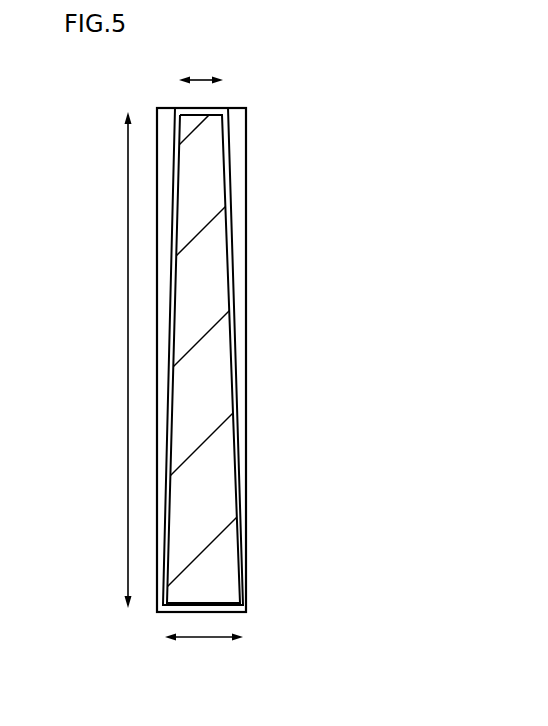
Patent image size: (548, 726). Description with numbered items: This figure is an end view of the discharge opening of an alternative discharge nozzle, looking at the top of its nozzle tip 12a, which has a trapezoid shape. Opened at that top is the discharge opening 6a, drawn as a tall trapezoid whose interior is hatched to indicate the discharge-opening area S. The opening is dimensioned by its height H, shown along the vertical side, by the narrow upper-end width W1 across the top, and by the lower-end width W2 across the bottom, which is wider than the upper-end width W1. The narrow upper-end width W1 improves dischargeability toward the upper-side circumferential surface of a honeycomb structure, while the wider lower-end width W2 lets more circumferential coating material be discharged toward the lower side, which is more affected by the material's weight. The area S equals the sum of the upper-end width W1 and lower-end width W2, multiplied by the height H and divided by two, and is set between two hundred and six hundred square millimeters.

The nozzle tip 12a is at (241, 232).
The discharge-opening area S is at (228, 413).
The discharge opening 6a is at (170, 481).
The height of discharge opening H is at (128, 290).
The upper-end width W1 is at (201, 80).
The lower-end width W2 is at (200, 637).